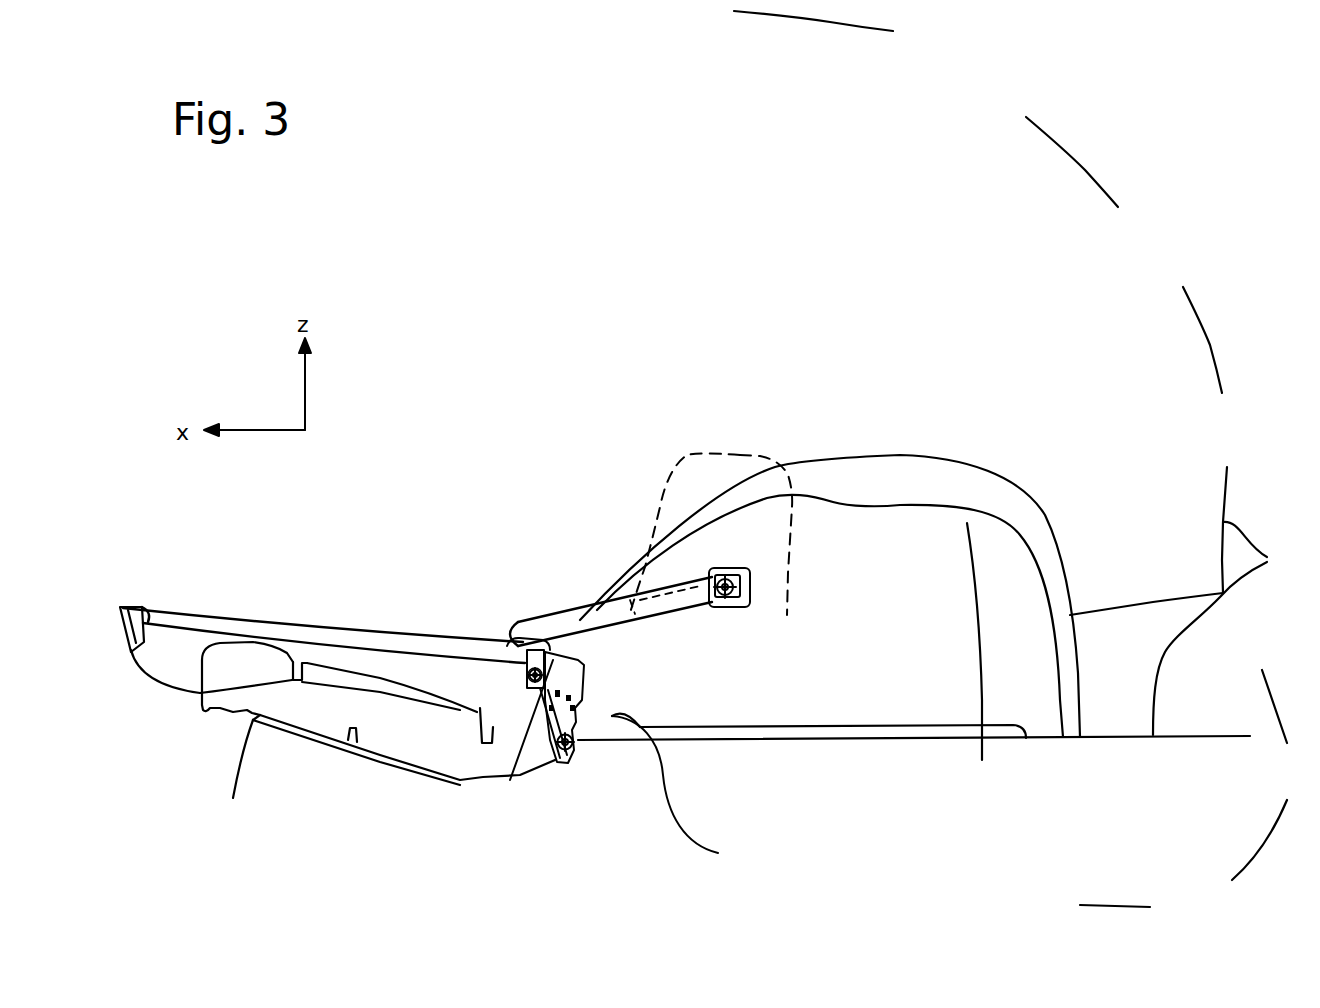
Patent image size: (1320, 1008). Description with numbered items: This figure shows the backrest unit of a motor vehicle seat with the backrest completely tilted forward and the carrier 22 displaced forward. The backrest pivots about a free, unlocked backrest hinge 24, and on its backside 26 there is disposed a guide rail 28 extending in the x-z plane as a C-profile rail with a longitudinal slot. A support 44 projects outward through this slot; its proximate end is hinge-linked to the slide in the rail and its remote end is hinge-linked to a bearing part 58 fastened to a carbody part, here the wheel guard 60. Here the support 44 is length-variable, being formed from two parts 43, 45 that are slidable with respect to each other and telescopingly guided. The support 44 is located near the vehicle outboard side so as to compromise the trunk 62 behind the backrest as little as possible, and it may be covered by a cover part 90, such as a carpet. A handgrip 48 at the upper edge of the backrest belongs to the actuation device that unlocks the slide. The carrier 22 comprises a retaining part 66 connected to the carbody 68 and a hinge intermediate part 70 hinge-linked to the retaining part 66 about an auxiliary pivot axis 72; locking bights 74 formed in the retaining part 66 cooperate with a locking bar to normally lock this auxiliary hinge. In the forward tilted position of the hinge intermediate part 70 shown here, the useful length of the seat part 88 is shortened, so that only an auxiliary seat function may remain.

The carrier 22 is at (567, 773).
The backrest hinge 24 is at (523, 645).
The backside 26 is at (165, 606).
The guide rail 28 is at (197, 618).
The part 43 is at (568, 630).
The support 44 is at (595, 605).
The part 45 is at (682, 603).
The handgrip 48 is at (120, 609).
The bearing part 58 is at (745, 607).
The wheel guard 60 is at (982, 745).
The trunk 62 is at (1130, 332).
The retaining part 66 is at (612, 716).
The carbody 68 is at (1267, 559).
The hinge intermediate part 70 is at (533, 655).
The auxiliary pivot axis 72 is at (553, 753).
The locking bights 74 is at (686, 801).
The seat part 88 is at (327, 703).
The cover part 90 is at (740, 455).